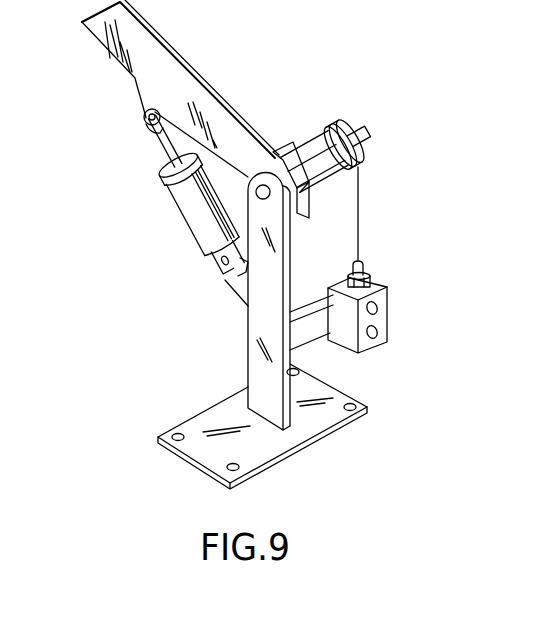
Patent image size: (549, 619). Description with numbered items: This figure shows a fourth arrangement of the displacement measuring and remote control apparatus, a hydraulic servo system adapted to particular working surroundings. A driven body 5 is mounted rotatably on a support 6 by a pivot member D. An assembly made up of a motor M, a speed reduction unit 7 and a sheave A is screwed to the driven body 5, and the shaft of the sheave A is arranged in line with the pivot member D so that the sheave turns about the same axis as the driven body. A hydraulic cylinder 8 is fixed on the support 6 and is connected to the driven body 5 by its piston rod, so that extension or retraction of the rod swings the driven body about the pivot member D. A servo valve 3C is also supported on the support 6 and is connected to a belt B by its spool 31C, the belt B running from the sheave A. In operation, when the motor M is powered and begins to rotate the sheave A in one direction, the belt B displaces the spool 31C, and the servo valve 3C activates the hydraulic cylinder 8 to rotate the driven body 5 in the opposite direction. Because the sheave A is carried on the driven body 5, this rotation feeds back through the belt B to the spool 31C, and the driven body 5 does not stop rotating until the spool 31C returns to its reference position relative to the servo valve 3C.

The driven body 5 is at (207, 92).
The hydraulic cylinder 8 is at (185, 218).
The motor M is at (297, 140).
The speed reduction unit 7 is at (341, 121).
The sheave A is at (366, 158).
The belt B is at (367, 207).
The pivot member D is at (268, 199).
The spool 31C is at (368, 268).
The servo valve 3C is at (388, 318).
The support 6 is at (302, 450).